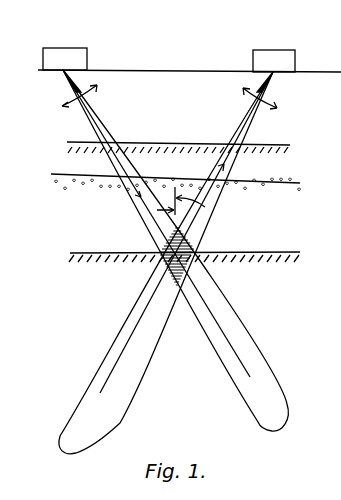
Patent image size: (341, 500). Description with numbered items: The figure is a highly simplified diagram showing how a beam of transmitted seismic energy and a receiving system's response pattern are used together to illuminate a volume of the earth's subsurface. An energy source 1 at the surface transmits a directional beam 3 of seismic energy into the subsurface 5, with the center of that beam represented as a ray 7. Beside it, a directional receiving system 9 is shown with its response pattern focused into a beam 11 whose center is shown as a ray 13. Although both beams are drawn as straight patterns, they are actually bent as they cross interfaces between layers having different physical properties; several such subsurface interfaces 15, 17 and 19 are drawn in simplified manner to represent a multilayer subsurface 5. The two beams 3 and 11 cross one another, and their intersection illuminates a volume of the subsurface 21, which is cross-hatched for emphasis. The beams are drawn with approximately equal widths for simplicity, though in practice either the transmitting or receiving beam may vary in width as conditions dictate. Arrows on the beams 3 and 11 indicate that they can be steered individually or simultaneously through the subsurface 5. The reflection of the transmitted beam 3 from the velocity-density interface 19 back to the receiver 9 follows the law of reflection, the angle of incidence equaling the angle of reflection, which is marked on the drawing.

The energy source 1 is at (80, 48).
The directional receiving system 9 is at (285, 50).
The directional beam 3 is at (102, 127).
The beam 11 is at (168, 263).
The ray 13 is at (248, 115).
The subsurface interface 15 is at (280, 145).
The subsurface interface 17 is at (75, 174).
The velocity-density interface 19 is at (268, 252).
The illuminated volume of the subsurface 21 is at (185, 242).
The ray 7 is at (157, 210).
The subsurface 5 is at (322, 278).